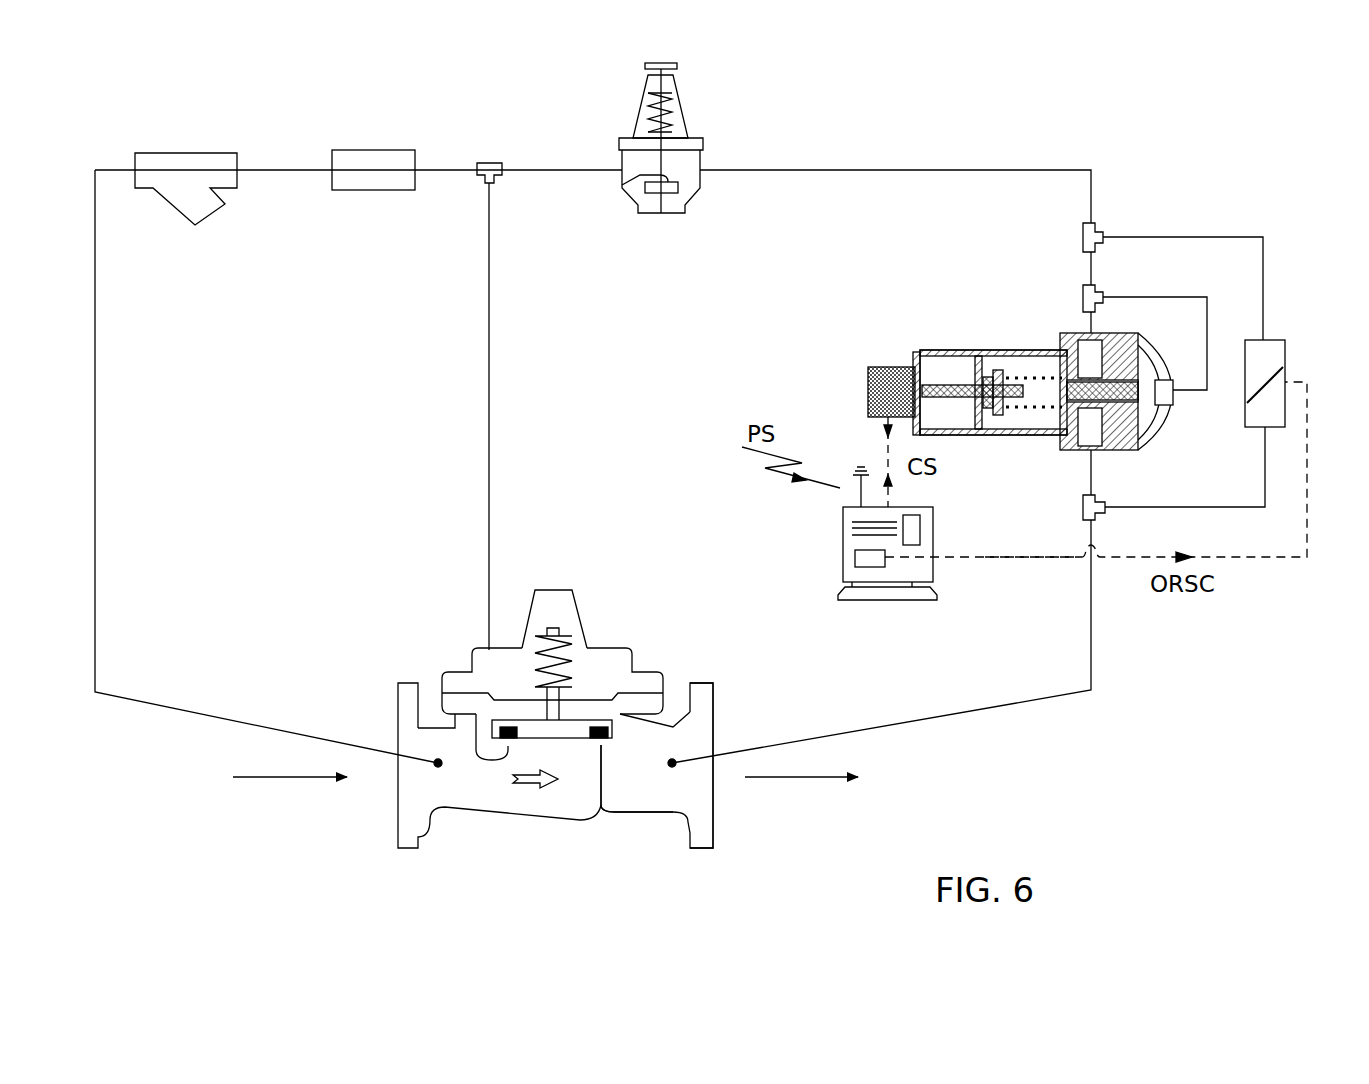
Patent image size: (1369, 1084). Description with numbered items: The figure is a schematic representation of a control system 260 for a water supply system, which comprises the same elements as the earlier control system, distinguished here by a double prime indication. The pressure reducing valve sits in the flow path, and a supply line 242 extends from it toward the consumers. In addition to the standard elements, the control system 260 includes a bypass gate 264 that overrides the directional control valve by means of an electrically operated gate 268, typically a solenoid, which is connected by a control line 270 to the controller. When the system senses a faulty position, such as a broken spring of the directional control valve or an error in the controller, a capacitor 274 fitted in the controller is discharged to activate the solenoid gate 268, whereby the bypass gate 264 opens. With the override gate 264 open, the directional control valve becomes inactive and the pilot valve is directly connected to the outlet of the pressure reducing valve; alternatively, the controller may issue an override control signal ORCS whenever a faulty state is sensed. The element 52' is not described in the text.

The bypass gate 264 is at (1162, 237).
The electrically operated gate 268 is at (1273, 340).
The capacitor 274 is at (868, 567).
The control line 270 is at (1013, 558).
The outlet flange 52' is at (735, 775).
The control system 260 is at (202, 790).
The supply line 242 is at (800, 777).